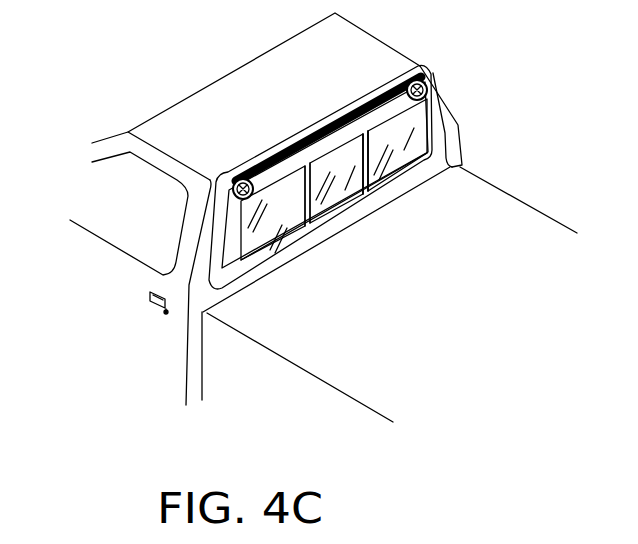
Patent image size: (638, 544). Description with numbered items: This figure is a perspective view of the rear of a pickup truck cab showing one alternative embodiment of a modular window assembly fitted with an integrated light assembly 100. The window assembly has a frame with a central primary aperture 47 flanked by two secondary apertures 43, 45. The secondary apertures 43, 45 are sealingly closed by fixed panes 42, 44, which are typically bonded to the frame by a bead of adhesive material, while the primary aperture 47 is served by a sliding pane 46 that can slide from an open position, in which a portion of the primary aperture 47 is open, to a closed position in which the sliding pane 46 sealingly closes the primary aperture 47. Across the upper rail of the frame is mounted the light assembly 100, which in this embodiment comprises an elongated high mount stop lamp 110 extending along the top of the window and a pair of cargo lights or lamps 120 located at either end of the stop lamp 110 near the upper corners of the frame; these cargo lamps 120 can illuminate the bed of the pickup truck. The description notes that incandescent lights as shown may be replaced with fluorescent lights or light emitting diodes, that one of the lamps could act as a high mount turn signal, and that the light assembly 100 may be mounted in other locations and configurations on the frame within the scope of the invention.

The light assembly 100 is at (328, 107).
The high mount stop lamp 110 is at (358, 103).
The cargo lights or lamps 120 is at (447, 46).
The fixed pane 42 is at (255, 252).
The secondary aperture 43 is at (273, 213).
The fixed pane 44 is at (426, 153).
The secondary aperture 45 is at (395, 146).
The sliding pane 46 is at (359, 186).
The primary aperture 47 is at (334, 180).